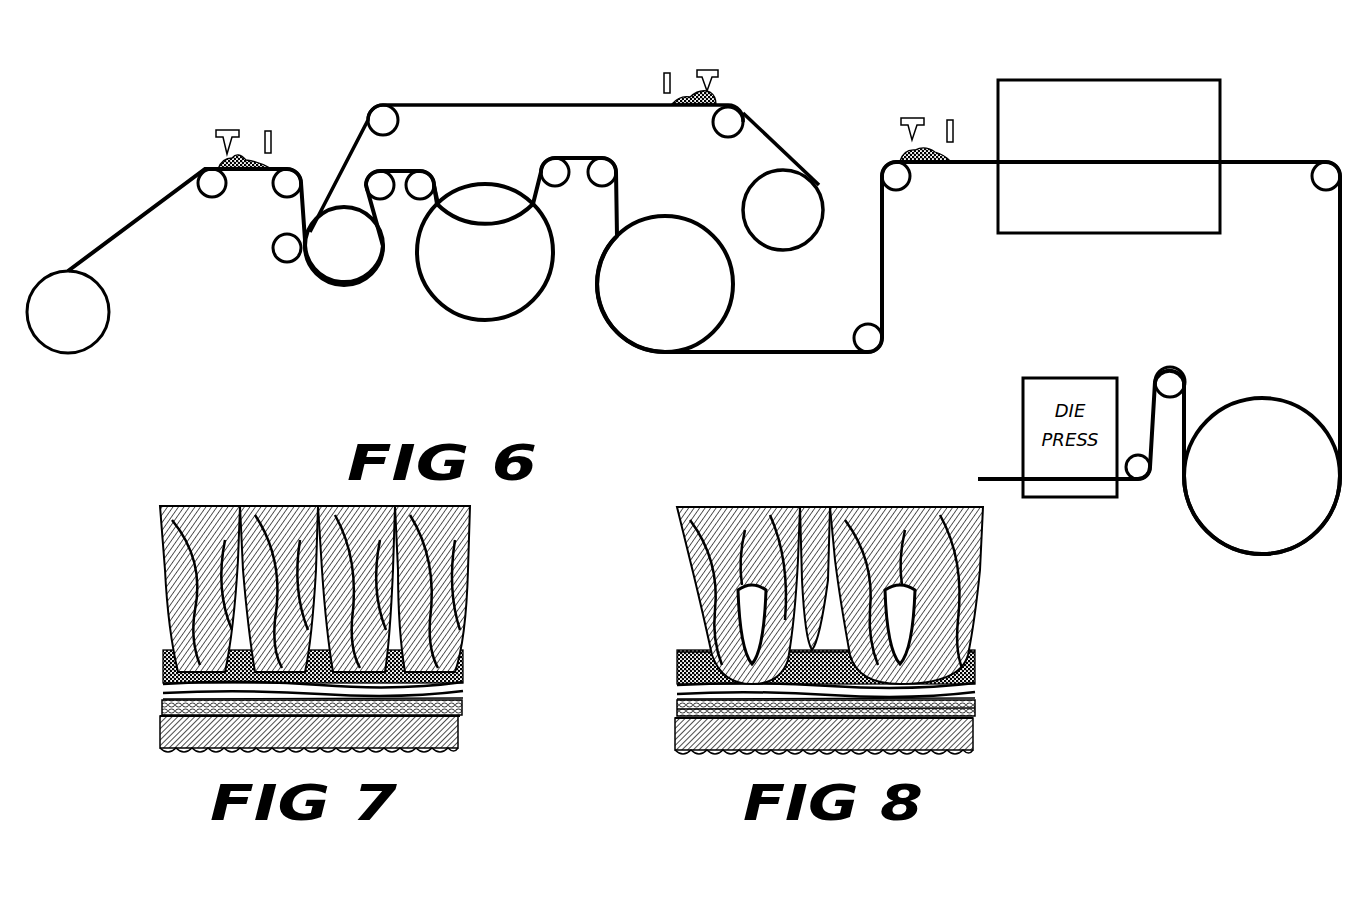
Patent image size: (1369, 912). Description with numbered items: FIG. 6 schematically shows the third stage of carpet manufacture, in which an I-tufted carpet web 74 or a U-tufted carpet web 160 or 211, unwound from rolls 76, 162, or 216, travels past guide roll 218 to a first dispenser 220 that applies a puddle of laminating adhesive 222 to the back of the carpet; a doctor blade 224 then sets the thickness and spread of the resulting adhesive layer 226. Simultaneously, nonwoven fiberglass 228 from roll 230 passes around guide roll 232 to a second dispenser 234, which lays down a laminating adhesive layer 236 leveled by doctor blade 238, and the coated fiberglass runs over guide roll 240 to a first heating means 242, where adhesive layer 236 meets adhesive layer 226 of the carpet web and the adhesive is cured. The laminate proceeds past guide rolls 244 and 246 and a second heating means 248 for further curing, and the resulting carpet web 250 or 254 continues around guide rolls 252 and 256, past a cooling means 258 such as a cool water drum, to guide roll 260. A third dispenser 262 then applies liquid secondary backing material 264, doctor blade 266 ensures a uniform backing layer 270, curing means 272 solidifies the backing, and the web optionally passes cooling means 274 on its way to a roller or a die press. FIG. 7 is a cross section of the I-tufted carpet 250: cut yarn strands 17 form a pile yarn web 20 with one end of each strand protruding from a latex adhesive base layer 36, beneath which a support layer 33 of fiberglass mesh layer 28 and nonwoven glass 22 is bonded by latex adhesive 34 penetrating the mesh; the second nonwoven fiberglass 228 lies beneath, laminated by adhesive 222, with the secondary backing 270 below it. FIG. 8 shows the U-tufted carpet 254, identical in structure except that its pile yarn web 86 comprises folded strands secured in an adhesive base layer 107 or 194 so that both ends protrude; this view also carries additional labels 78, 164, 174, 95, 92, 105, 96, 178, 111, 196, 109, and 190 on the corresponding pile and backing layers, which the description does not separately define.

In FIG. 6, the I-tufted carpet web 74 is at (675, 356).
In FIG. 6, the U-tufted carpet web 160 is at (675, 356).
In FIG. 6, the U-tufted carpet web 211 is at (135, 210).
In FIG. 6, the roll 76 is at (128, 322).
In FIG. 6, the roll 162 is at (128, 322).
In FIG. 6, the roll 216 is at (98, 340).
In FIG. 6, the guide roll 218 is at (200, 197).
In FIG. 6, the first dispenser 220 is at (225, 128).
In FIG. 6, the laminating adhesive 222 is at (250, 156).
In FIG. 7, the laminating adhesive 222 is at (472, 695).
In FIG. 8, the laminating adhesive 222 is at (983, 700).
In FIG. 6, the doctor blade 224 is at (270, 128).
In FIG. 6, the adhesive layer 226 is at (295, 170).
In FIG. 6, the nonwoven fiberglass 228 is at (776, 146).
In FIG. 7, the nonwoven fiberglass 228 is at (158, 713).
In FIG. 8, the nonwoven fiberglass 228 is at (673, 720).
In FIG. 6, the roll 230 is at (788, 249).
In FIG. 6, the guide roll 232 is at (724, 130).
In FIG. 6, the second dispenser 234 is at (712, 70).
In FIG. 6, the laminating adhesive layer 236 is at (621, 103).
In FIG. 6, the doctor blade 238 is at (666, 70).
In FIG. 6, the guide roll 240 is at (383, 104).
In FIG. 6, the first heating means 242 is at (340, 280).
In FIG. 6, the guide roll 244 is at (386, 162).
In FIG. 6, the guide roll 246 is at (425, 172).
In FIG. 6, the second heating means 248 is at (502, 305).
In FIG. 6, the carpet 250 is at (486, 184).
In FIG. 7, the carpet 250 is at (348, 565).
In FIG. 6, the carpet 254 is at (538, 200).
In FIG. 8, the carpet 254 is at (861, 569).
In FIG. 6, the guide roll 252 is at (553, 182).
In FIG. 6, the guide roll 256 is at (604, 172).
In FIG. 6, the cooling means 258 is at (659, 342).
In FIG. 6, the guide roll 260 is at (883, 173).
In FIG. 6, the third dispenser 262 is at (905, 115).
In FIG. 6, the liquid secondary backing material 264 is at (937, 143).
In FIG. 7, the liquid secondary backing material 264 is at (472, 716).
In FIG. 8, the liquid secondary backing material 264 is at (983, 718).
In FIG. 6, the doctor blade 266 is at (955, 132).
In FIG. 6, the secondary backing 270 is at (980, 157).
In FIG. 7, the secondary backing 270 is at (170, 748).
In FIG. 8, the secondary backing 270 is at (678, 743).
In FIG. 6, the curing means 272 is at (1125, 94).
In FIG. 6, the cooling means 274 is at (1262, 523).
In FIG. 7, the pile yarn web 20 is at (315, 497).
In FIG. 7, the cut yarn strands 17 is at (472, 537).
In FIG. 7, the latex adhesive base layer 36 is at (163, 652).
In FIG. 7, the support layer 33 is at (270, 678).
In FIG. 7, the fiberglass mesh layer 28 is at (168, 680).
In FIG. 7, the nonwoven glass 22 is at (168, 692).
In FIG. 7, the latex adhesive 34 is at (472, 650).
In FIG. 8, the pile yarn web 86 is at (760, 504).
In FIG. 8, the tuft 174 is at (680, 678).
In FIG. 8, the carpet 78 is at (943, 595).
In FIG. 8, the carpet 164 is at (976, 571).
In FIG. 8, the adhesive base layer 107 is at (781, 648).
In FIG. 8, the adhesive base layer 194 is at (683, 650).
In FIG. 8, the primary backing 95 is at (769, 675).
In FIG. 8, the layer 92 is at (792, 670).
In FIG. 8, the layer 105 is at (683, 690).
In FIG. 8, the layer 96 is at (786, 710).
In FIG. 8, the layer 178 is at (677, 707).
In FIG. 8, the precoat layer 111 is at (874, 666).
In FIG. 8, the layer 196 is at (983, 652).
In FIG. 8, the backing layer 109 is at (874, 692).
In FIG. 8, the layer 190 is at (983, 683).